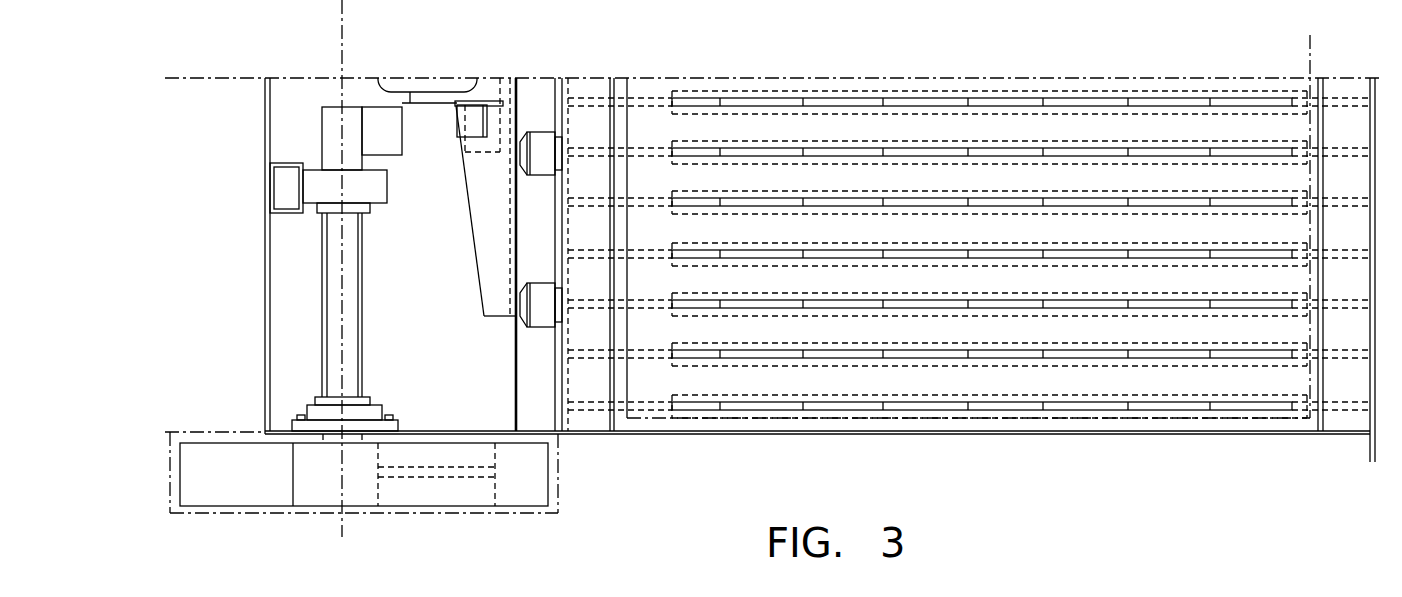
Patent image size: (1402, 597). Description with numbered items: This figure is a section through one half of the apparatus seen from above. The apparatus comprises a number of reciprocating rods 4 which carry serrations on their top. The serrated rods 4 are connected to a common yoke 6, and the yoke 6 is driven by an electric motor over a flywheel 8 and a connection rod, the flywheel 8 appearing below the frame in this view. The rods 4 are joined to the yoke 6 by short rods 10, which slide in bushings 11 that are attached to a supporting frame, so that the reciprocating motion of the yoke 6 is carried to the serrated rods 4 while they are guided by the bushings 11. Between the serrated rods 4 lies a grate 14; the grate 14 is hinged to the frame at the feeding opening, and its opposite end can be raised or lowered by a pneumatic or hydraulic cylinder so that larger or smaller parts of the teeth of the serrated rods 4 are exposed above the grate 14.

The reciprocating rods 4 is at (969, 222).
The common yoke 6 is at (503, 122).
The flywheel 8 is at (305, 479).
The short rods 10 is at (565, 153).
The bushings 11 is at (542, 162).
The grate 14 is at (754, 125).